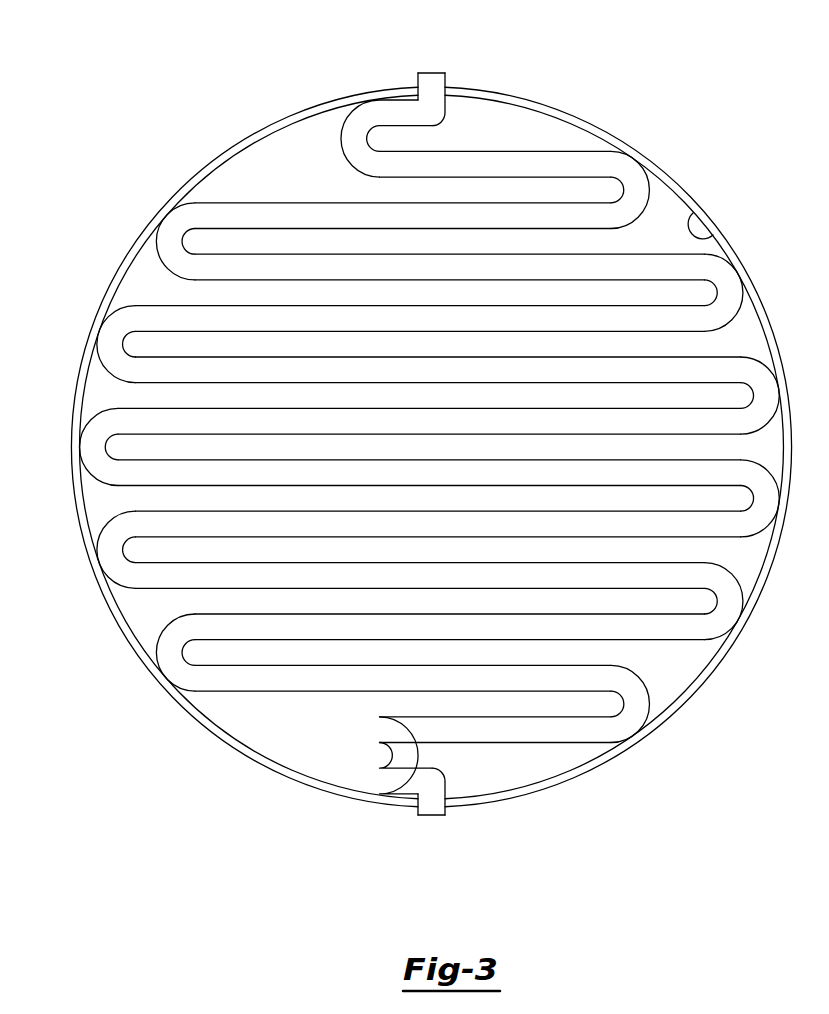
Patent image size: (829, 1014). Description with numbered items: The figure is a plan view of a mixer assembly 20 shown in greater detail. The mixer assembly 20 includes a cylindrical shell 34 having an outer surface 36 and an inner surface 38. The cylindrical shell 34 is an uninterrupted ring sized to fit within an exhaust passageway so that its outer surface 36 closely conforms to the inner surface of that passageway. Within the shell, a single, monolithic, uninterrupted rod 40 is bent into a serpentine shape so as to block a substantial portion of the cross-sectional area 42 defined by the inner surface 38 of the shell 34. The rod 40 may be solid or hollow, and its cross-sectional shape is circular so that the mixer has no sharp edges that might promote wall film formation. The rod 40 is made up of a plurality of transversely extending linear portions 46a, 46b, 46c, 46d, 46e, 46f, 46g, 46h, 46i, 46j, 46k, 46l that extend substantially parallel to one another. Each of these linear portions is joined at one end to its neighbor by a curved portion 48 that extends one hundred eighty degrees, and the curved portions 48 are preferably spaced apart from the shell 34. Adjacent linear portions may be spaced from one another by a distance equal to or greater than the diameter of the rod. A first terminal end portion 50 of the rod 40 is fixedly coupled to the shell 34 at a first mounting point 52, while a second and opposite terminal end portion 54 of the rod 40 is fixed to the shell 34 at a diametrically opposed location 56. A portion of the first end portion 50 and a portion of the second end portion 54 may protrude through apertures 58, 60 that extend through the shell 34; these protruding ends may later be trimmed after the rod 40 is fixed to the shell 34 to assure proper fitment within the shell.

The mixer assembly 20 is at (418, 449).
The cylindrical shell 34 is at (665, 168).
The outer surface 36 is at (746, 272).
The inner surface 38 is at (692, 234).
The rod 40 is at (572, 140).
The cross-sectional area 42 is at (298, 172).
The linear portion 46a is at (543, 160).
The linear portion 46b is at (225, 210).
The linear portion 46c is at (242, 268).
The linear portion 46d is at (192, 320).
The linear portion 46e is at (230, 367).
The linear portion 46f is at (178, 423).
The linear portion 46g is at (203, 473).
The linear portion 46h is at (193, 527).
The linear portion 46i is at (180, 575).
The linear portion 46j is at (233, 630).
The linear portion 46k is at (235, 678).
The linear portion 46l is at (530, 735).
The curved portion 48 is at (637, 195).
The first terminal end portion 50 is at (393, 95).
The first mounting point 52 is at (447, 85).
The second terminal end portion 54 is at (394, 800).
The diametrically opposed location 56 is at (445, 808).
The aperture 58 is at (428, 85).
The aperture 60 is at (430, 815).